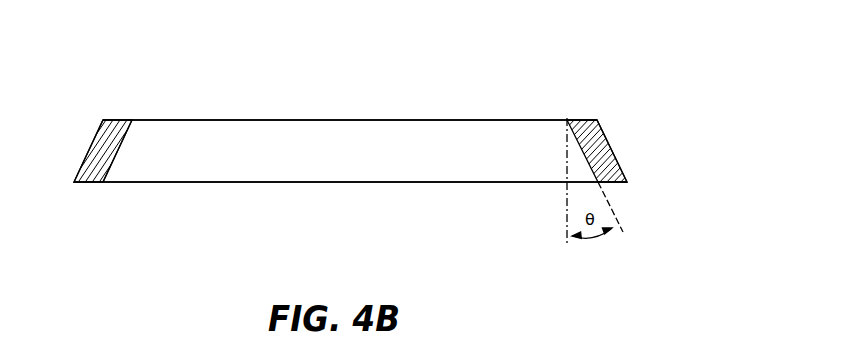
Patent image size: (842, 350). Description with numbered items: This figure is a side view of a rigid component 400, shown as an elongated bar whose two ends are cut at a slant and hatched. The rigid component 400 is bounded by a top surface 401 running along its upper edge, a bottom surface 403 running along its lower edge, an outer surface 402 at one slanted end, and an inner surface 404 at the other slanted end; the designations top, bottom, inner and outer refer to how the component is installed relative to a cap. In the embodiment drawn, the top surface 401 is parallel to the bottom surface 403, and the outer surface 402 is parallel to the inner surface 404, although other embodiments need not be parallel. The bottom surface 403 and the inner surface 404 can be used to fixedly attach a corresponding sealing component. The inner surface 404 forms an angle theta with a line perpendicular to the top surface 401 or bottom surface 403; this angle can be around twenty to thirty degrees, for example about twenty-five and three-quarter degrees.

The rigid component 400 is at (684, 93).
The top surface 401 is at (123, 110).
The outer surface 402 is at (83, 146).
The bottom surface 403 is at (91, 189).
The inner surface 404 is at (127, 151).